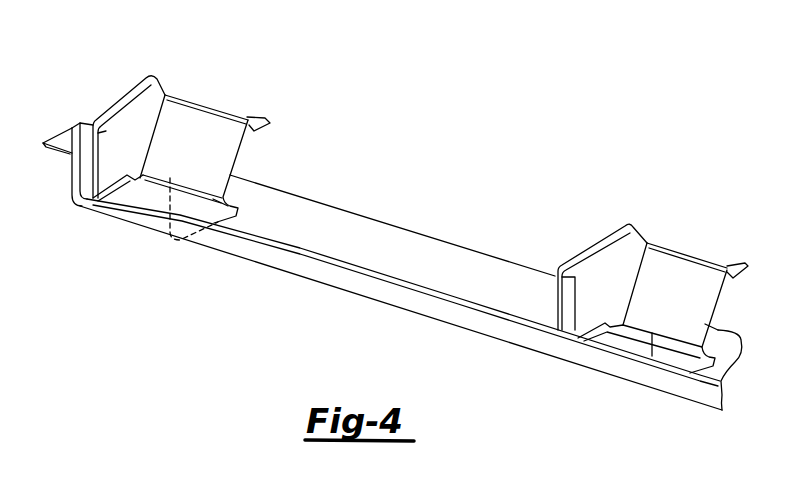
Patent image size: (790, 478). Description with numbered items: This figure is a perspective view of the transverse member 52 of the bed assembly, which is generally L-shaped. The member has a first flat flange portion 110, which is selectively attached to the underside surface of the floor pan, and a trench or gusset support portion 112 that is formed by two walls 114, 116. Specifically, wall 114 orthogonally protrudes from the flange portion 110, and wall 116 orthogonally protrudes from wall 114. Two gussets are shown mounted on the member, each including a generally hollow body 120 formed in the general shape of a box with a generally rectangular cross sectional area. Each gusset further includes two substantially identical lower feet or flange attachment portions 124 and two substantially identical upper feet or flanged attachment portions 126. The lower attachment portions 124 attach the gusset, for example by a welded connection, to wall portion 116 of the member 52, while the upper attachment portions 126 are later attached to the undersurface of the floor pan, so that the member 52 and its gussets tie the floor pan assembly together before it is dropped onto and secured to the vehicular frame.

The transverse member 52 is at (53, 193).
The first flat flange portion 110 is at (55, 136).
The trench or gusset support portion 112 is at (298, 220).
The wall 114 is at (406, 254).
The wall 116 is at (557, 355).
The hollow body 120 is at (193, 100).
The lower feet or flange attachment portions 124 is at (240, 193).
The upper feet or flanged attachment portions 126 is at (256, 118).